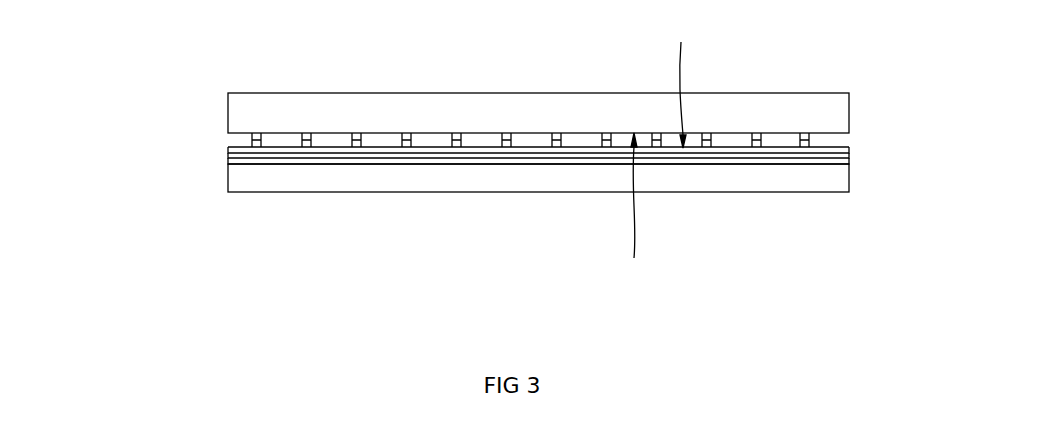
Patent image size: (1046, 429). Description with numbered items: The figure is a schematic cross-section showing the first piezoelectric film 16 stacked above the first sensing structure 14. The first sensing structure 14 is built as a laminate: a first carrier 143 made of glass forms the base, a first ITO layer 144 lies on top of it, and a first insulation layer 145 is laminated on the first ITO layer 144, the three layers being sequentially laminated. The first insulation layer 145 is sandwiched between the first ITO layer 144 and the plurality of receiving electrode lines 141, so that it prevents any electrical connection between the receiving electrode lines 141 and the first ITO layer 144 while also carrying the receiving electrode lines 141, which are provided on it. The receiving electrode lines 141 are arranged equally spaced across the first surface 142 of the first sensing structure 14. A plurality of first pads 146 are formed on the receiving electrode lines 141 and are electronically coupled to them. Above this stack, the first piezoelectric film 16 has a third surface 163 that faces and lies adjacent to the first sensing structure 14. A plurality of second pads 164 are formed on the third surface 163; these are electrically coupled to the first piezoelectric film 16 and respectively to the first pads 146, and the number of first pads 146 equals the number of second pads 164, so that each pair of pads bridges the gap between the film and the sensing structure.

The first sensing structure 14 is at (489, 150).
The first piezoelectric film 16 is at (561, 116).
The receiving electrode lines 141 is at (243, 149).
The first surface 142 is at (679, 80).
The first carrier 143 is at (552, 173).
The first ITO layer 144 is at (243, 162).
The first insulation layer 145 is at (243, 157).
The first pads 146 is at (812, 141).
The third surface 163 is at (636, 210).
The second pads 164 is at (812, 137).